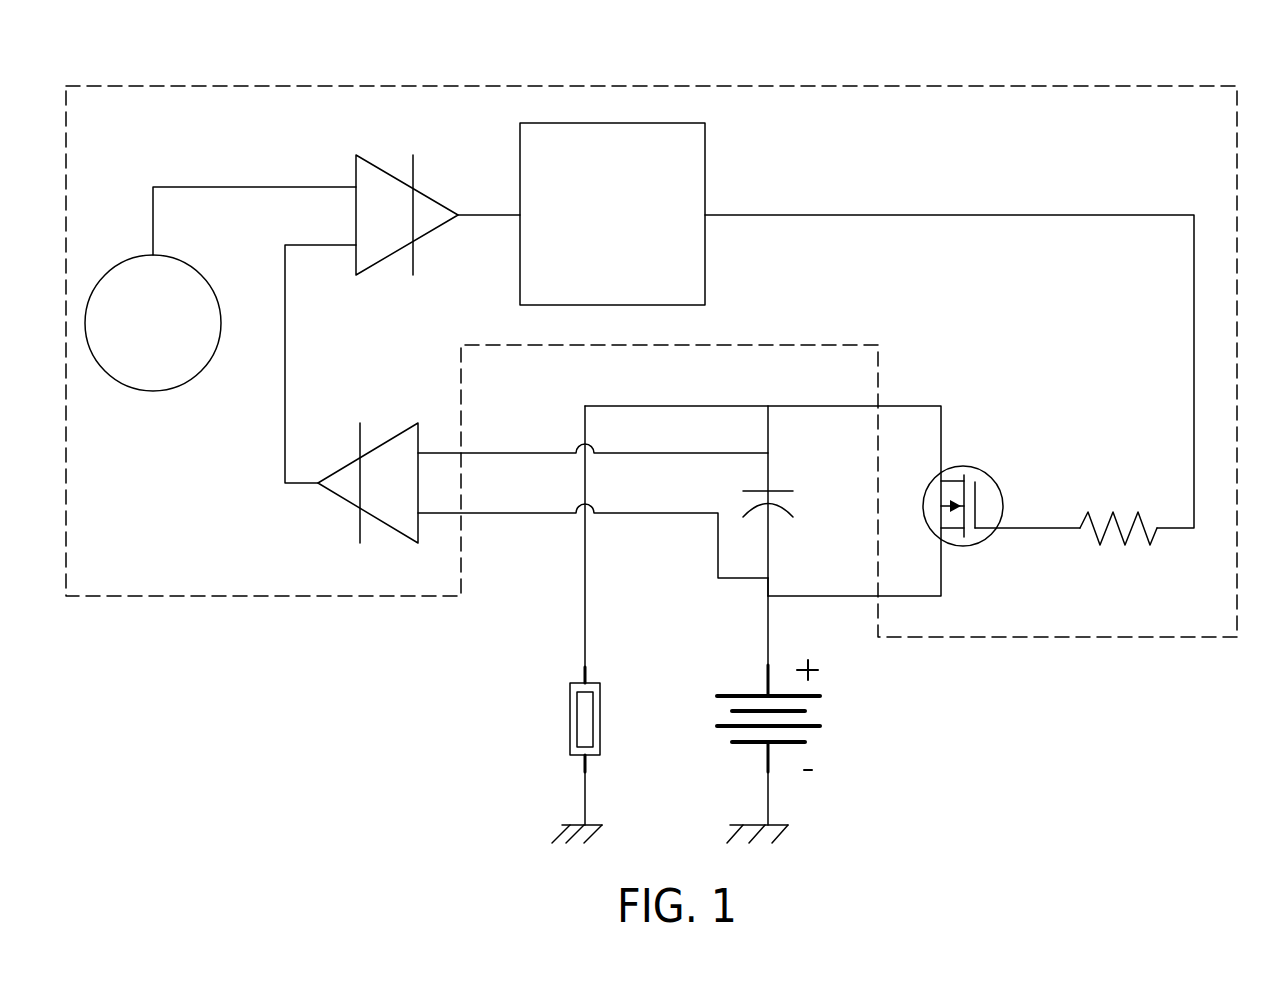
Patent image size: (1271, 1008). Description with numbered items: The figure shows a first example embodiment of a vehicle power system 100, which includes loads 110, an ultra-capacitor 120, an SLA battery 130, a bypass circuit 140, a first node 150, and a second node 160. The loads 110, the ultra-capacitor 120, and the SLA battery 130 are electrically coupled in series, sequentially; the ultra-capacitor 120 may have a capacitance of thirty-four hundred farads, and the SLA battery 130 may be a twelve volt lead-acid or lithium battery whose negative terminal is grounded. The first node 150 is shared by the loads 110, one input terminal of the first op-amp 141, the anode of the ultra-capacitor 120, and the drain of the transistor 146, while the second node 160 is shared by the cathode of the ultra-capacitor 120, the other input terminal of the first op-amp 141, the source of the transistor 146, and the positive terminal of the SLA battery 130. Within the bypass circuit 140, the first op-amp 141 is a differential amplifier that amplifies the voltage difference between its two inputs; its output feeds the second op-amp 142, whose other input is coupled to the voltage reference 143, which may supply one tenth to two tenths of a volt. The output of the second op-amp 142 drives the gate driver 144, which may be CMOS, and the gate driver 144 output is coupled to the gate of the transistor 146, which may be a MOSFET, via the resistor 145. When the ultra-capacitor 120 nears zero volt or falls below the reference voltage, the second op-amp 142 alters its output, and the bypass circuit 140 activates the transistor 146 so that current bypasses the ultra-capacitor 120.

The vehicle power system 100 is at (1137, 52).
The loads 110 is at (570, 730).
The ultra-capacitor 120 is at (781, 490).
The SLA battery 130 is at (820, 725).
The bypass circuit 140 is at (208, 597).
The first op-amp 141 is at (337, 495).
The second op-amp 142 is at (356, 213).
The voltage reference 143 is at (148, 392).
The gate driver 144 is at (705, 258).
The resistor 145 is at (1098, 522).
The transistor 146 is at (965, 467).
The first node 150 is at (768, 405).
The second node 160 is at (768, 580).